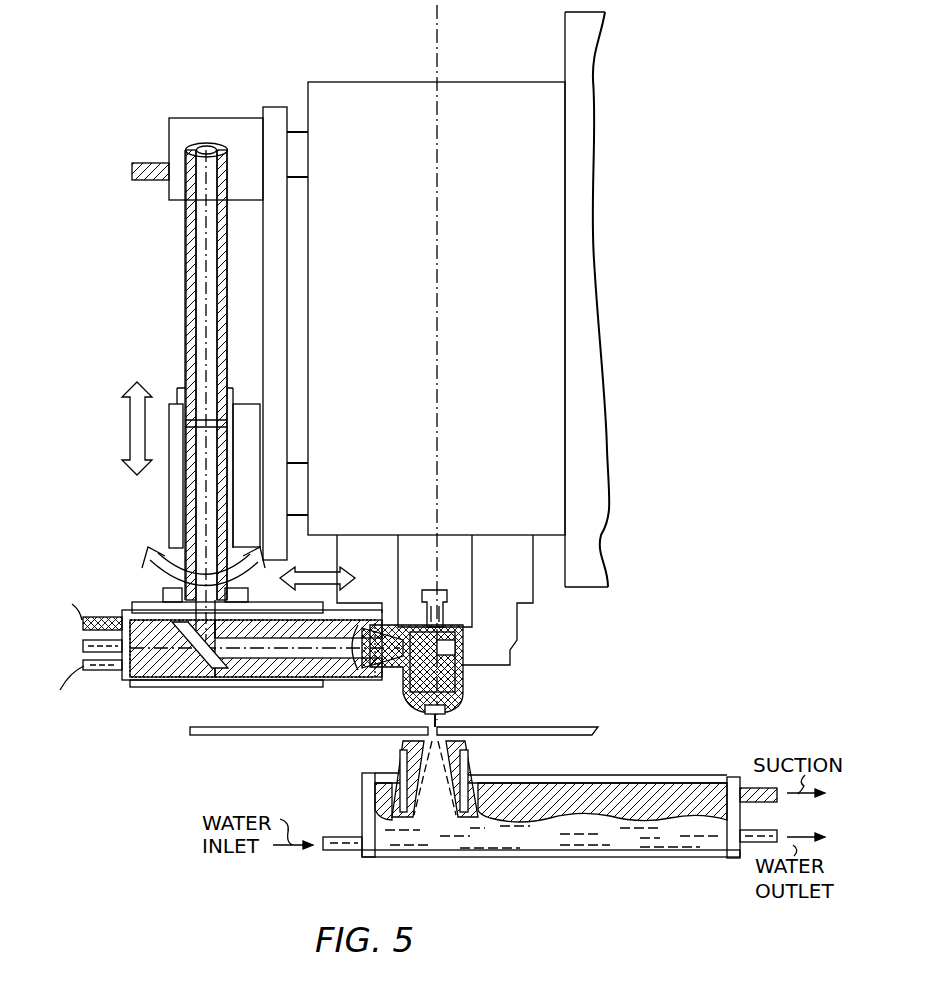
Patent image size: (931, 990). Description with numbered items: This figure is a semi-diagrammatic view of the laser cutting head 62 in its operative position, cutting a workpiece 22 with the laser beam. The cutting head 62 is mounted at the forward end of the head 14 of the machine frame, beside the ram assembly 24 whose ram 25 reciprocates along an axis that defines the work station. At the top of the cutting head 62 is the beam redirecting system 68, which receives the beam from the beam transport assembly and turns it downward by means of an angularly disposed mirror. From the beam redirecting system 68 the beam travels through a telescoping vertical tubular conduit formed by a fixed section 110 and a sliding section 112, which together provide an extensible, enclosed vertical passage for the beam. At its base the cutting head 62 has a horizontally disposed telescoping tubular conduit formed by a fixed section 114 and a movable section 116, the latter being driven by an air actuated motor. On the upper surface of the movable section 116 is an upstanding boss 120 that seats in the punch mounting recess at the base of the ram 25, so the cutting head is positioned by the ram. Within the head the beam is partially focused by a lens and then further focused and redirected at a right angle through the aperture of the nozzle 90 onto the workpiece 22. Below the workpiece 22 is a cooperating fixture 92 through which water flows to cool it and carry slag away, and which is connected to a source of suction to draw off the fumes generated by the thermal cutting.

The head 14 is at (590, 54).
The ram assembly 24 is at (508, 82).
The ram 25 is at (463, 597).
The upstanding boss 120 is at (437, 600).
The beam redirecting system 68 is at (197, 118).
The laser cutting head 62 is at (185, 232).
The fixed section 110 is at (185, 282).
The sliding section 112 is at (178, 388).
The fixed section 114 is at (165, 687).
The movable section 116 is at (220, 672).
The nozzle 90 is at (455, 706).
The workpiece 22 is at (560, 727).
The cooperating fixture 92 is at (470, 758).